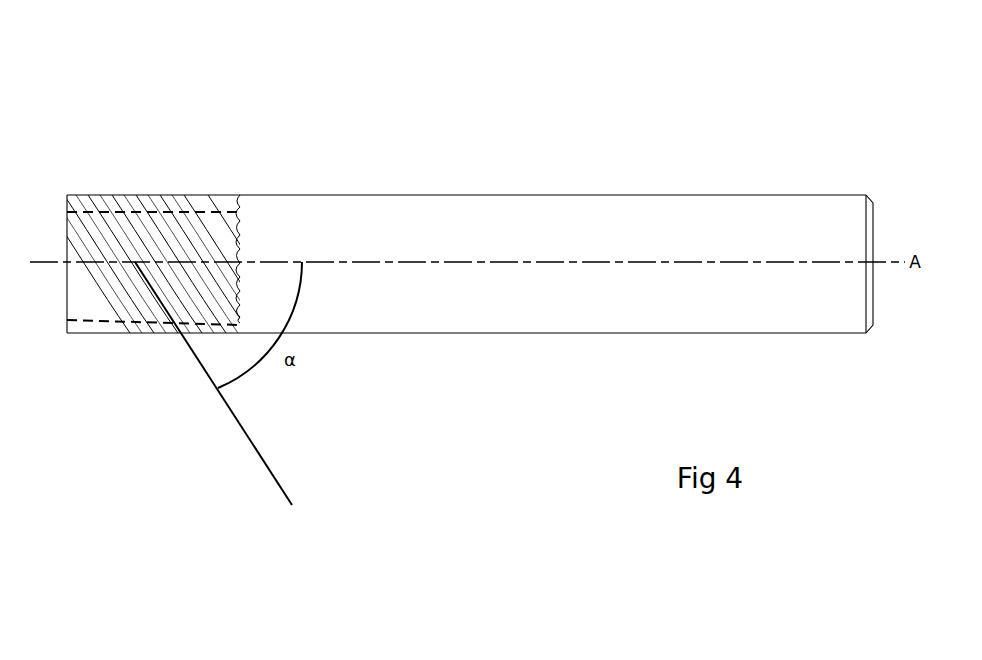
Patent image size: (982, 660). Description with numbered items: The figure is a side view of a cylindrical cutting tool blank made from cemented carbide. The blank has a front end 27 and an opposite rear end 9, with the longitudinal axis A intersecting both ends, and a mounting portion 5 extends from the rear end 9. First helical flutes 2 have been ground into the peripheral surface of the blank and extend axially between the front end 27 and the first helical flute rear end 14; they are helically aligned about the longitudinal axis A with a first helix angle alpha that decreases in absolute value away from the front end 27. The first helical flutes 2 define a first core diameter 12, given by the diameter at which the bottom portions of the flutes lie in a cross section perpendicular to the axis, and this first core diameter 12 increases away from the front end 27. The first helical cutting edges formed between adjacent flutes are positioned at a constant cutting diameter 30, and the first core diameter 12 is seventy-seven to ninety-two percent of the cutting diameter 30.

The first helical flutes 2 is at (203, 235).
The mounting portion 5 is at (466, 264).
The rear end 9 is at (873, 217).
The first core diameter 12 is at (130, 322).
The first helical flute rear end 14 is at (236, 184).
The front end 27 is at (68, 184).
The cutting diameter 30 is at (90, 333).